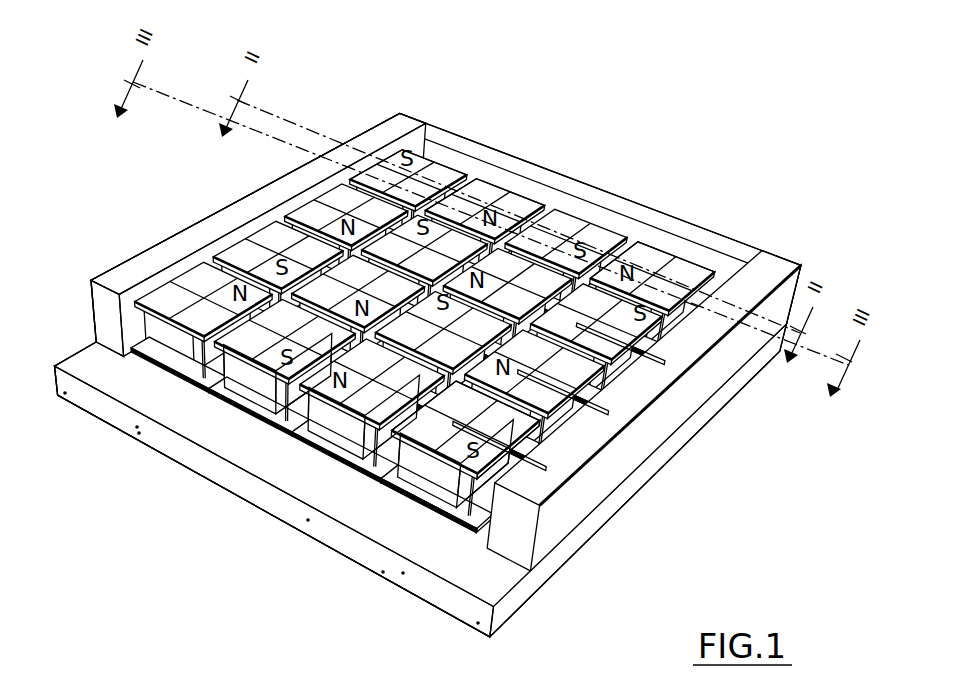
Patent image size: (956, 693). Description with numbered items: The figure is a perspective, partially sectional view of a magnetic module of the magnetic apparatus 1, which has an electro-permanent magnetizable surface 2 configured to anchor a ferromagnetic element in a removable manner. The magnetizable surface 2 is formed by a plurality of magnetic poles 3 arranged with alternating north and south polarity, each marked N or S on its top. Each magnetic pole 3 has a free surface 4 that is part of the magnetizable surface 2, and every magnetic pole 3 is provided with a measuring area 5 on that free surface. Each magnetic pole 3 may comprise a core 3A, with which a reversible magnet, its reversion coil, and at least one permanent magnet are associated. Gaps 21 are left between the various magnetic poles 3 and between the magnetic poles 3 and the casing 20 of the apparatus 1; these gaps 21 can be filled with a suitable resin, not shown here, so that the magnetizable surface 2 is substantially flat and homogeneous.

The magnetic apparatus 1 is at (686, 104).
The electro-permanent magnetizable surface 2 is at (393, 158).
The magnetic pole 3 is at (532, 192).
The core 3A is at (473, 533).
The free surface 4 is at (435, 440).
The measuring area 5 is at (558, 436).
The casing 20 is at (115, 337).
The gap 21 is at (120, 320).